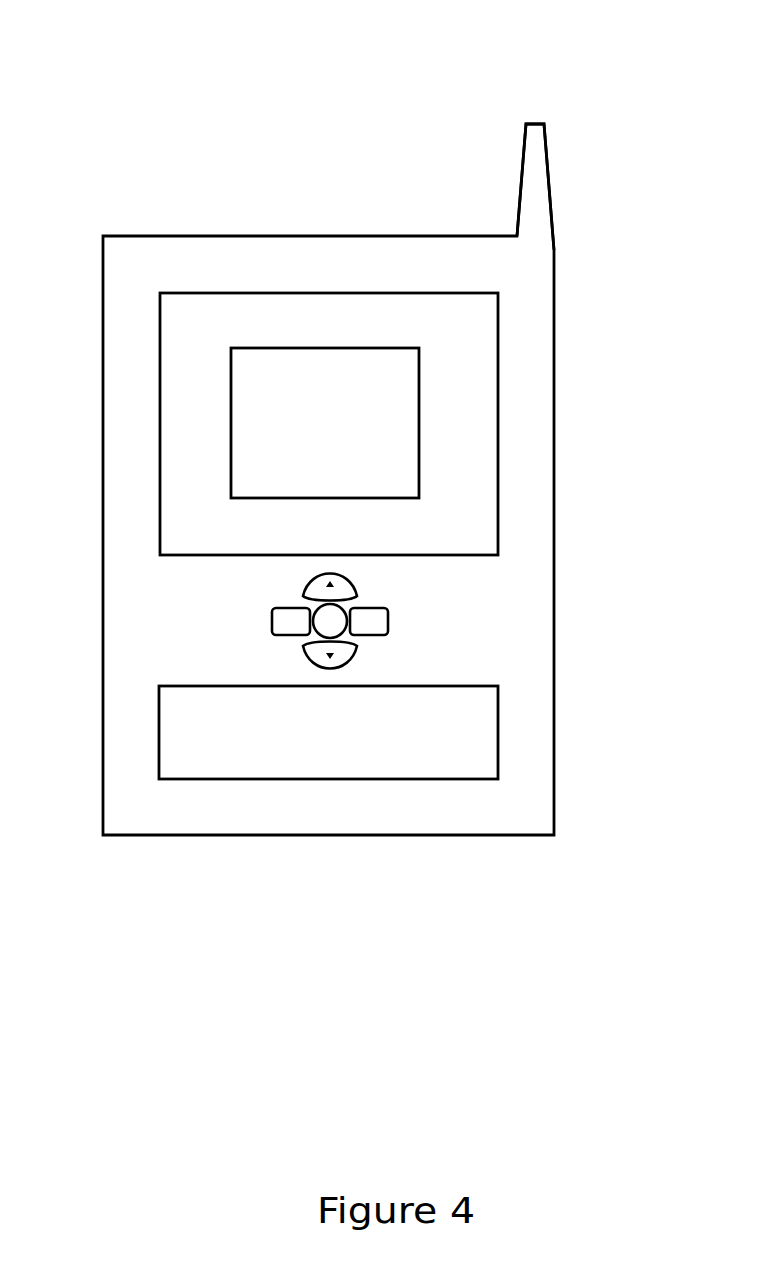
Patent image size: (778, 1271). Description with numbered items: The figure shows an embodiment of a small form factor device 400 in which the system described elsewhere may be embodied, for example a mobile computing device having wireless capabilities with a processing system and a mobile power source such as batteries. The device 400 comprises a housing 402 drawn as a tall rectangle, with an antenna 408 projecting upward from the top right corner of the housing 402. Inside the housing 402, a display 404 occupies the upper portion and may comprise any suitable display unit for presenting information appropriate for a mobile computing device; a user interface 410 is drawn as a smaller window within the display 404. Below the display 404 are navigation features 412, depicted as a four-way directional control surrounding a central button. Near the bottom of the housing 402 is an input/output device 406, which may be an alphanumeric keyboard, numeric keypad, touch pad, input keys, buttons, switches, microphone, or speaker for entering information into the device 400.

The small form factor device 400 is at (108, 56).
The housing 402 is at (554, 538).
The display 404 is at (498, 312).
The input/output (I/O) device 406 is at (498, 725).
The antenna 408 is at (520, 173).
The user interface 410 is at (420, 447).
The navigation features 412 is at (416, 615).